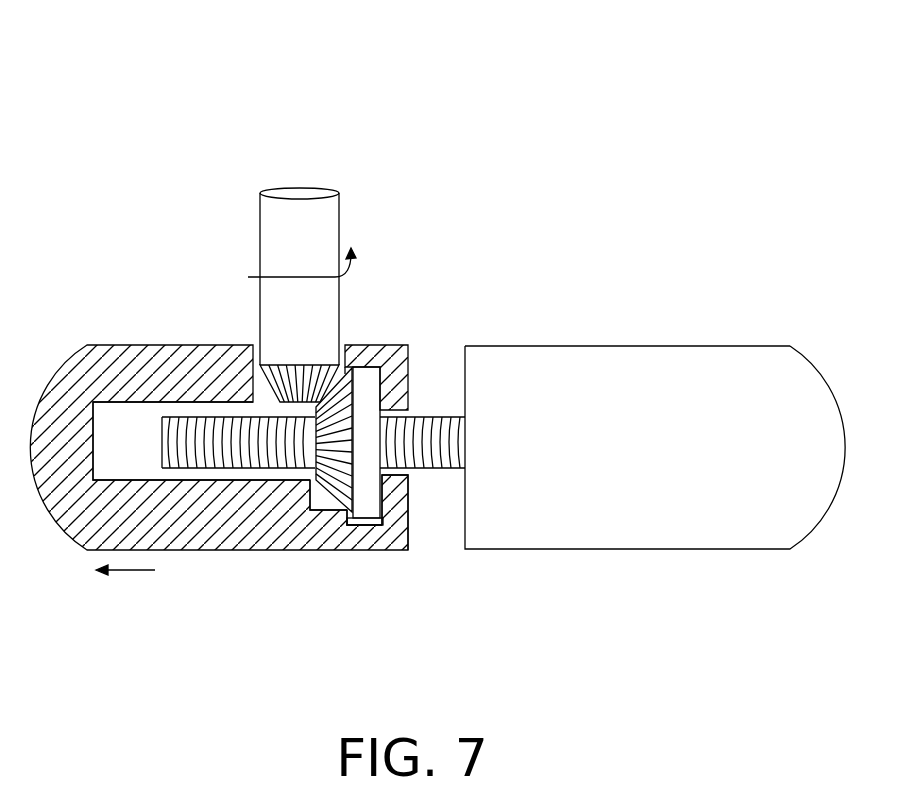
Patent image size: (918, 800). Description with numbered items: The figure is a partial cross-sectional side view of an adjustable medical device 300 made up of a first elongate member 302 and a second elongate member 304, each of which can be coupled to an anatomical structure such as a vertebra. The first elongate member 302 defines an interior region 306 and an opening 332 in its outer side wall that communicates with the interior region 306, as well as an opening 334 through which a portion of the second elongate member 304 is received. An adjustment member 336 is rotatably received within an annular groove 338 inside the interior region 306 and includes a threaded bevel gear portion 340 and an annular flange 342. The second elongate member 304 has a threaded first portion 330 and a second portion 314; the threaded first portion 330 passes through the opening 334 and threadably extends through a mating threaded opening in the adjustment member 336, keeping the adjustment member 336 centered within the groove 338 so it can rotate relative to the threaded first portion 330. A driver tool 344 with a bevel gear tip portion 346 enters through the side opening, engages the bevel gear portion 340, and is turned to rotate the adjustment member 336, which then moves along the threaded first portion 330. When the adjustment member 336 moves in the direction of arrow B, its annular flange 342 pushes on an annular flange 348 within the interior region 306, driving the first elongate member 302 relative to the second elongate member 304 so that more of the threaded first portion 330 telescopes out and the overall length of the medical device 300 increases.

The adjustable medical device 300 is at (514, 118).
The first elongate member 302 is at (177, 553).
The second elongate member 304 is at (512, 556).
The interior region 306 is at (123, 430).
The second portion 314 is at (548, 346).
The threaded first portion 330 is at (212, 415).
The opening 332 is at (258, 378).
The opening 334 is at (410, 478).
The adjustment member 336 is at (408, 346).
The annular groove 338 is at (375, 413).
The threaded bevel gear portion 340 is at (330, 485).
The annular flange 342 is at (366, 545).
The driver tool 344 is at (343, 237).
The bevel gear tip portion 346 is at (322, 382).
The annular flange 348 is at (362, 524).